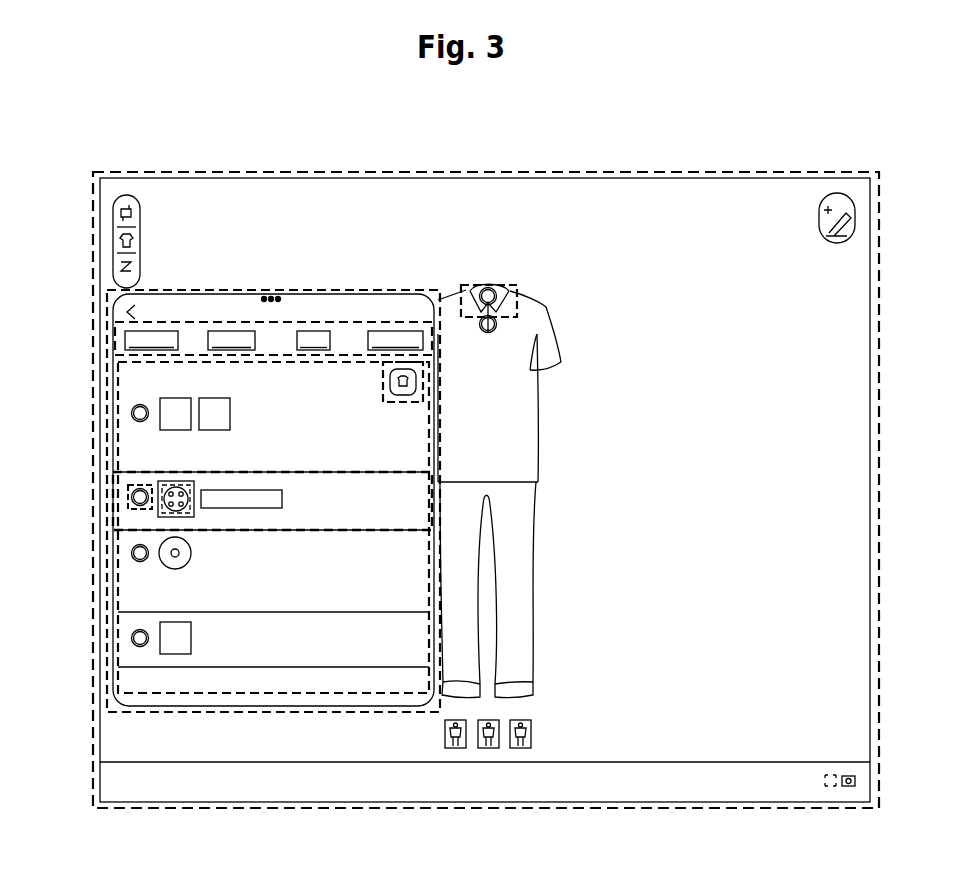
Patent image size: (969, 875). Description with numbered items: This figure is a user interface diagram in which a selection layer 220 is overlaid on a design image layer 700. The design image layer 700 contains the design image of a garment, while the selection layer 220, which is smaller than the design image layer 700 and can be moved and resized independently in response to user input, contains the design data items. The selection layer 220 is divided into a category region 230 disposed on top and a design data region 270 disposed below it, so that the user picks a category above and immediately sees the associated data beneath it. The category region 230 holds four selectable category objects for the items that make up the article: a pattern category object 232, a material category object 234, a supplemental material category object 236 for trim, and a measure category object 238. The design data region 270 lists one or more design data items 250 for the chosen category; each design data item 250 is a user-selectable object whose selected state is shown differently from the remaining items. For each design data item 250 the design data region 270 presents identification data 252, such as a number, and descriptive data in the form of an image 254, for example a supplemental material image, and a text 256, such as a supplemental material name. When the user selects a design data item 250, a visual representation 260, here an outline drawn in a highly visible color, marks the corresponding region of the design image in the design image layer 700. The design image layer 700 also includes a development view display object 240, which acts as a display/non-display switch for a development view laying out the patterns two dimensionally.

The design image layer 700 is at (229, 171).
The selection layer 220 is at (107, 293).
The category region 230 is at (273, 304).
The pattern category object 232 is at (167, 331).
The material category object 234 is at (225, 331).
The supplemental material category object 236 is at (320, 331).
The measure category object 238 is at (390, 331).
The development view display object 240 is at (383, 386).
The design data item 250 is at (114, 479).
The identification data 252 is at (128, 500).
The image describing the design data item 254 is at (187, 519).
The text describing the design data item 256 is at (255, 509).
The visual representation 260 is at (509, 285).
The design data region 270 is at (118, 387).